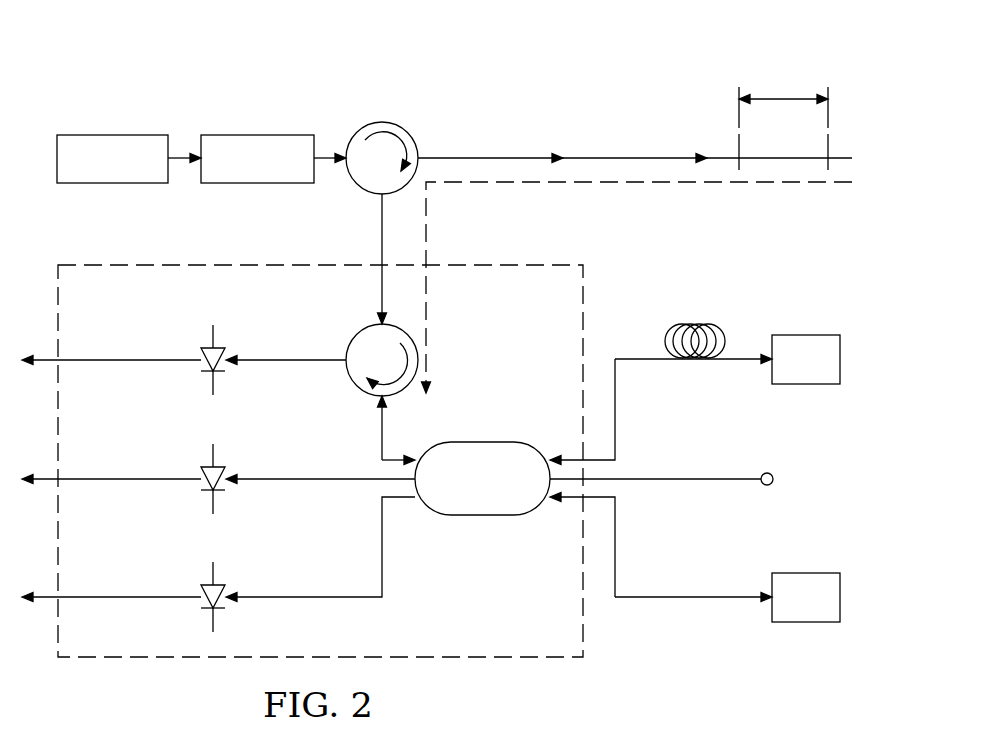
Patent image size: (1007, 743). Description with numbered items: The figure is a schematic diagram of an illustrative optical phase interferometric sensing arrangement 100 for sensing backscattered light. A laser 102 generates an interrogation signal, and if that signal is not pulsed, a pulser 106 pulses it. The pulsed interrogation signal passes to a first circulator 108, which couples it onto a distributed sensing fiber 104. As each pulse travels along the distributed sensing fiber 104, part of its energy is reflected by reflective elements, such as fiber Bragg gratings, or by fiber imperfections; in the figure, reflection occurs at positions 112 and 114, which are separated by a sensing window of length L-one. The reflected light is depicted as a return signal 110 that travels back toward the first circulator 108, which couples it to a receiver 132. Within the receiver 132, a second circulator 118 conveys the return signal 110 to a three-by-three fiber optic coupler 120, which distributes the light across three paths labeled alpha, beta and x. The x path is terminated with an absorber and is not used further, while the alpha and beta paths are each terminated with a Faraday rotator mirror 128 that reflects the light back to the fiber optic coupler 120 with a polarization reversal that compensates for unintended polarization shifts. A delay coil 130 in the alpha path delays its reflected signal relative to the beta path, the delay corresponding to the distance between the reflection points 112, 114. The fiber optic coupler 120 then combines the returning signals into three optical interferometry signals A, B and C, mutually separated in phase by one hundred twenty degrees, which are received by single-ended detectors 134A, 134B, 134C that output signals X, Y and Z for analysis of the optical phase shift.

The optical phase interferometric sensing arrangement 100 is at (167, 56).
The laser 102 is at (112, 133).
The distributed sensing fiber 104 is at (515, 155).
The pulser 106 is at (258, 133).
The first circulator 108 is at (357, 132).
The return signal 110 is at (650, 186).
The reflection position 112 is at (737, 147).
The reflection position 114 is at (830, 147).
The second circulator 118 is at (357, 334).
The 3×3 fiber optic coupler 120 is at (487, 441).
The Faraday rotator mirror 128 is at (808, 334).
The delay coil 130 is at (700, 322).
The receiver 132 is at (198, 262).
The single-ended detector 134A is at (211, 336).
The single-ended detector 134B is at (212, 455).
The single-ended detector 134C is at (212, 573).